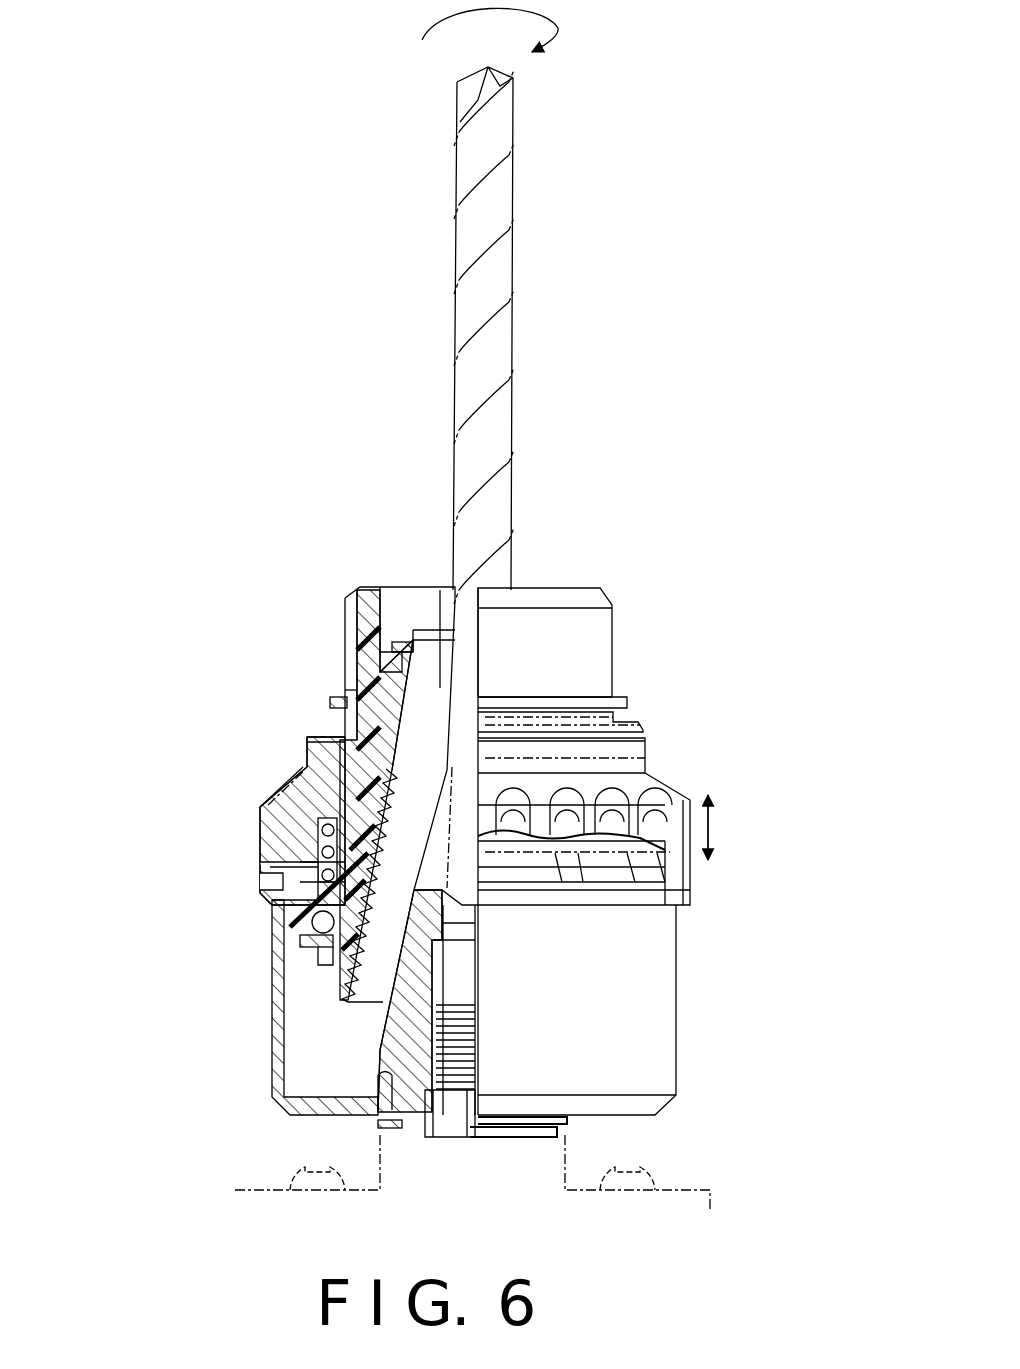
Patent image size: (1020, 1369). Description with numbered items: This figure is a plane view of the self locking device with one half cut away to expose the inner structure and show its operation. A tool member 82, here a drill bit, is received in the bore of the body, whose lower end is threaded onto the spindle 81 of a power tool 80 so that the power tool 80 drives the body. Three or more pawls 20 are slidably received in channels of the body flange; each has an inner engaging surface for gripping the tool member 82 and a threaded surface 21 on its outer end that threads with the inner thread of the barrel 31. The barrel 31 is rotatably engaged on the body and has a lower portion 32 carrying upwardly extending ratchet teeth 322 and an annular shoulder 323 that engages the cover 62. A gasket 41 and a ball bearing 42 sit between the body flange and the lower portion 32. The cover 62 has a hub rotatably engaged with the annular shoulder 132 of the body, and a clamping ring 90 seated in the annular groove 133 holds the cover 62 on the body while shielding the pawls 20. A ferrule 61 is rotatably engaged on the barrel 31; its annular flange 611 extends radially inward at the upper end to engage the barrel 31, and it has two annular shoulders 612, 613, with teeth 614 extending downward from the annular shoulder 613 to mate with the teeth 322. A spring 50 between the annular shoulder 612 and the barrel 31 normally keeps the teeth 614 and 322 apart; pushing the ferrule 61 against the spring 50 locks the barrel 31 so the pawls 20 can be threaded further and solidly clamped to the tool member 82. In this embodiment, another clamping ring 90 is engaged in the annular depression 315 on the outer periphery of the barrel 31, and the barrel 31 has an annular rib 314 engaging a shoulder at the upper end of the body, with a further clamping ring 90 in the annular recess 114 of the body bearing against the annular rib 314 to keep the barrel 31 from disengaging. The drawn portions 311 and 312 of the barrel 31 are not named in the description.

The tool member 82 is at (513, 257).
The barrel 31 is at (613, 650).
The ferrule 61 is at (638, 718).
The teeth 614 is at (575, 872).
The cover 62 is at (655, 1027).
The clamping ring 90 is at (398, 642).
The outer sleeve 312 is at (347, 612).
The sleeve top 311 is at (440, 590).
The annular recess 114 is at (412, 630).
The annular rib 314 is at (388, 652).
The annular depression 315 is at (350, 690).
The threaded surface 21 is at (348, 975).
The pawls 20 is at (376, 1068).
The spring 50 is at (305, 840).
The annular flange 611 is at (320, 737).
The annular shoulder 612 is at (292, 778).
The annular shoulder 613 is at (318, 835).
The lower portion 32 is at (300, 885).
The teeth 322 is at (312, 876).
The annular shoulder 323 is at (300, 915).
The ball bearing 42 is at (318, 940).
The gasket 41 is at (320, 950).
The annular shoulder 132 is at (292, 1098).
The annular groove 133 is at (400, 1125).
The spindle 81 is at (453, 1110).
The power tool 80 is at (680, 1190).